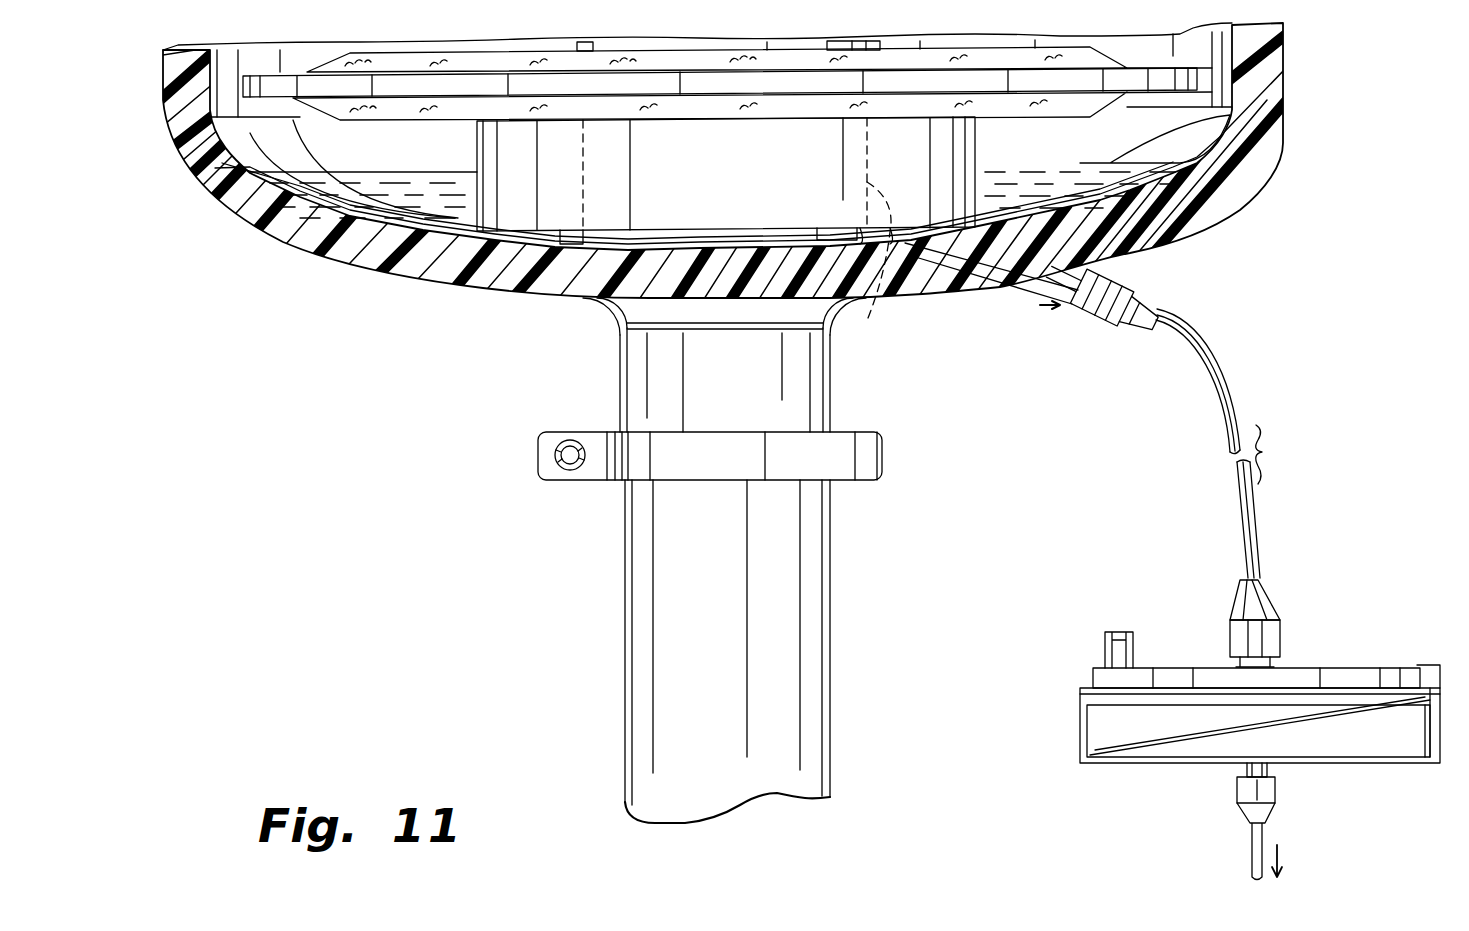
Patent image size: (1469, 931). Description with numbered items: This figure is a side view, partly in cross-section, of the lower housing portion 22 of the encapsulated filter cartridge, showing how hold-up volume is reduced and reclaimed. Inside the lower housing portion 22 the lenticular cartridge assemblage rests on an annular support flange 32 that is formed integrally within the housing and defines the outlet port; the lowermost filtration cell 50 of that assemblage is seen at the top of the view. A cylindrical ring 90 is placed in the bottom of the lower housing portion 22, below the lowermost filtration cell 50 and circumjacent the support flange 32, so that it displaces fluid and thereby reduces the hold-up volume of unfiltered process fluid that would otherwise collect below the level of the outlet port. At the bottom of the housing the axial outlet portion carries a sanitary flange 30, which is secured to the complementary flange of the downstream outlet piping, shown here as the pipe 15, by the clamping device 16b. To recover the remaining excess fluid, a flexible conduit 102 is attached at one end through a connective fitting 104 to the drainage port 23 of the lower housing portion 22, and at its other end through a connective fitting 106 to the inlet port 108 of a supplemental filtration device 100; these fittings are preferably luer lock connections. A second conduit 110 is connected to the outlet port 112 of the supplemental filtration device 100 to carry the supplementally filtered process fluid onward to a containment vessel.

The lower housing portion 22 is at (1287, 85).
The lowermost filtration cell 50 is at (392, 105).
The cylindrical ring 90 is at (563, 187).
The annular support flange 32 is at (863, 305).
The connective fitting 104 is at (1141, 287).
The flexible conduit 102 is at (1240, 390).
The drainage port 23 is at (1060, 313).
The connective fitting 106 is at (1282, 597).
The inlet port 108 is at (1257, 652).
The supplemental filtration device 100 is at (1043, 692).
The outlet port 112 is at (1243, 770).
The second conduit 110 is at (1273, 803).
The sanitary flange 30 is at (622, 377).
The clamping device 16b is at (596, 478).
The pipe 15 is at (640, 667).